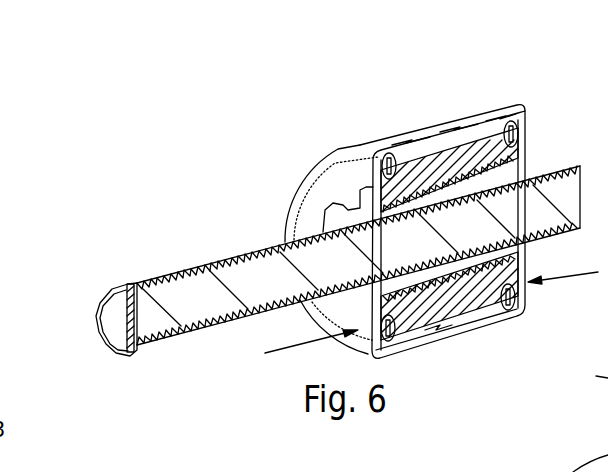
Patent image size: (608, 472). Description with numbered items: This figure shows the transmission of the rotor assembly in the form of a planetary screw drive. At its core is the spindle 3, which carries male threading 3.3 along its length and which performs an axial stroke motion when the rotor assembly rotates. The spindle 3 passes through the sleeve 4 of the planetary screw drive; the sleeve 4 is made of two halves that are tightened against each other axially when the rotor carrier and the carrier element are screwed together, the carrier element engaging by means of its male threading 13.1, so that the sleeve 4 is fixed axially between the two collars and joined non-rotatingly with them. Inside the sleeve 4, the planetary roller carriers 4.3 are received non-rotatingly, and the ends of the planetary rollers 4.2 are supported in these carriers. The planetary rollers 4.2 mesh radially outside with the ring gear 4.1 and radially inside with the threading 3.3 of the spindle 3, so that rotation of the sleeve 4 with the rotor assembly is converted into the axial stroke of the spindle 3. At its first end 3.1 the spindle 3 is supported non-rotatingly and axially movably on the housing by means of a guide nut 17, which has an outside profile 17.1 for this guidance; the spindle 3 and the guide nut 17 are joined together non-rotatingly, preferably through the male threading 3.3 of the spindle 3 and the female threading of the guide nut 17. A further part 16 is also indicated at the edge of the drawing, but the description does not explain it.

The spindle 3 is at (358, 255).
The first end of the spindle 3.1 is at (146, 294).
The threading of the spindle 3.3 is at (268, 270).
The sleeve 4 is at (458, 205).
The ring gear 4.1 is at (490, 138).
The planetary rollers 4.2 is at (470, 178).
The planetary roller carriers 4.3 is at (355, 202).
The guide nut 17 is at (98, 260).
The outside profile 17.1 is at (98, 303).
The drive unit 16 is at (602, 366).
The male threading 13.1 is at (10, 471).